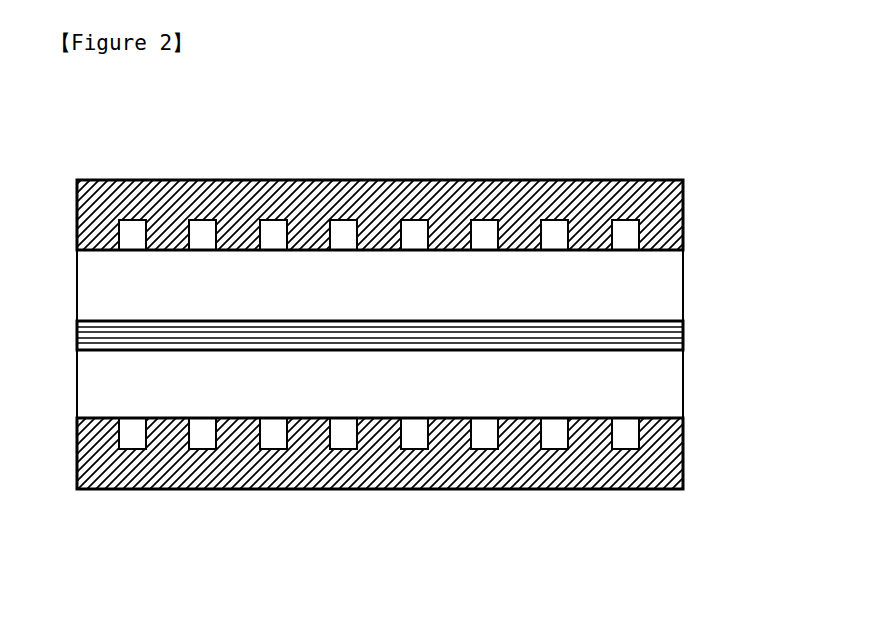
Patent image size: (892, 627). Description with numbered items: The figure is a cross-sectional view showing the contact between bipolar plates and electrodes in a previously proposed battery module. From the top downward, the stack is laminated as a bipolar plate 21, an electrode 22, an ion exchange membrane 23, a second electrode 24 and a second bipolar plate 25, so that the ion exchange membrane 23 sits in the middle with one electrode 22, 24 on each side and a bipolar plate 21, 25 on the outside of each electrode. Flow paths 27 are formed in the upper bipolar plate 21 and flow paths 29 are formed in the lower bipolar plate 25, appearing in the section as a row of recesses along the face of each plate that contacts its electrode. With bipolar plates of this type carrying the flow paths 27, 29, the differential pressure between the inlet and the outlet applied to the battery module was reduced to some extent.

The bipolar plate 21 is at (683, 213).
The electrode 22 is at (683, 287).
The ion exchange membrane 23 is at (683, 340).
The electrode 24 is at (683, 394).
The bipolar plate 25 is at (683, 463).
The flow path 27 is at (560, 212).
The flow path 29 is at (627, 449).